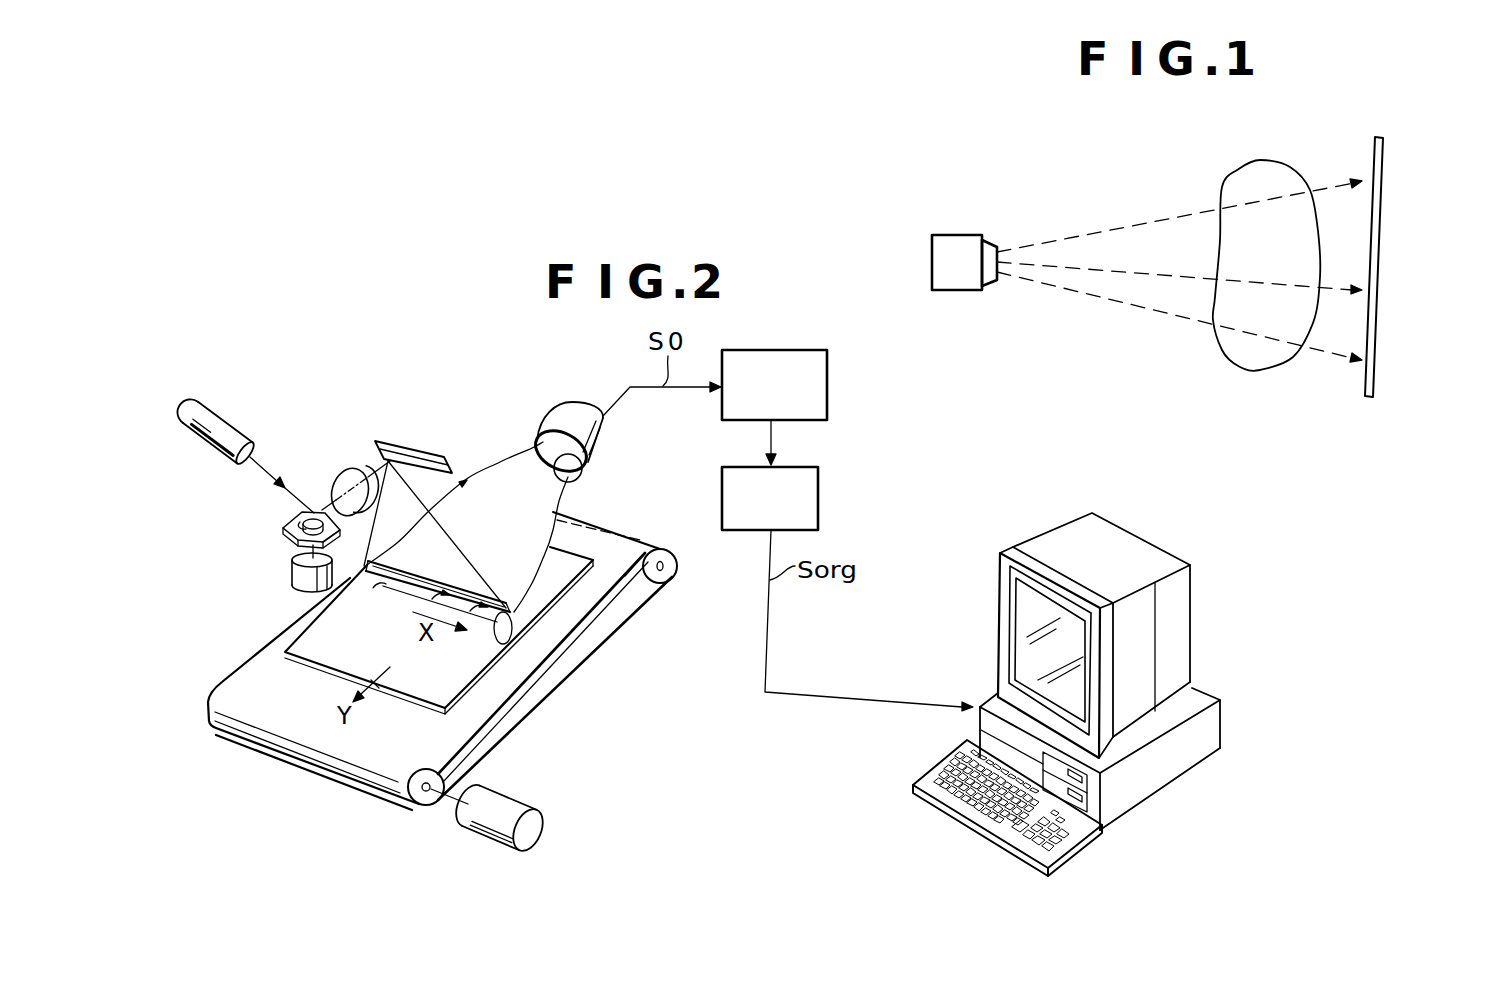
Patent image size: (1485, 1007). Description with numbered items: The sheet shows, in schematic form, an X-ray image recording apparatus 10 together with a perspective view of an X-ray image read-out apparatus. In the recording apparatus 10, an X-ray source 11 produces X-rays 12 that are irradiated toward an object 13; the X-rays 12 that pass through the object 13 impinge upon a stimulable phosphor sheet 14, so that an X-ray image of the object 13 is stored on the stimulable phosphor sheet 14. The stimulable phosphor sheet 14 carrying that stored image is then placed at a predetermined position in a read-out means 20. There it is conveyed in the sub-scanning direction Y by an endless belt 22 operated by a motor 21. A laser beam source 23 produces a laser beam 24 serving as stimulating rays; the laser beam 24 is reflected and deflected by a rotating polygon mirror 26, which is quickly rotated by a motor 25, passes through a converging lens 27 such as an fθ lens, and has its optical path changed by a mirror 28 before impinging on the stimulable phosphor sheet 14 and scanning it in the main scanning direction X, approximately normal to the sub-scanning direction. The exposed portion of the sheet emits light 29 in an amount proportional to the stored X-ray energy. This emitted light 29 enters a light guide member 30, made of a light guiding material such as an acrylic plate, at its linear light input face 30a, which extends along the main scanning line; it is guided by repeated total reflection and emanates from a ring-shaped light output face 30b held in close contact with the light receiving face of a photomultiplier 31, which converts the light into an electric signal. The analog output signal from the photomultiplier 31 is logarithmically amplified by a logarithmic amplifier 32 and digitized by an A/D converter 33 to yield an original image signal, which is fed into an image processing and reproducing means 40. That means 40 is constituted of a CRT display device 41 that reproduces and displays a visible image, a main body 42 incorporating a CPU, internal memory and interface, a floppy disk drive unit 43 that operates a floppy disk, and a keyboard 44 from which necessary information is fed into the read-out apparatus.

In FIG. 1, the measuring system 10 is at (1166, 152).
In FIG. 1, the X-ray source 11 is at (960, 240).
In FIG. 1, the X-rays 12 is at (1135, 227).
In FIG. 1, the object 13 is at (1272, 172).
In FIG. 1, the stimulable phosphor sheet 14 is at (1383, 148).
In FIG. 2, the stimulable phosphor sheet 14 is at (463, 668).
In FIG. 2, the read-out means 20 is at (402, 410).
In FIG. 2, the motor 21 is at (507, 803).
In FIG. 2, the endless belt 22 is at (443, 725).
In FIG. 2, the laser beam source 23 is at (221, 425).
In FIG. 2, the laser beam 24 is at (267, 470).
In FIG. 2, the motor 25 is at (292, 575).
In FIG. 2, the rotating polygon mirror 26 is at (290, 523).
In FIG. 2, the converging lens 27 is at (341, 470).
In FIG. 2, the mirror 28 is at (432, 447).
In FIG. 2, the emitted light 29 is at (397, 578).
In FIG. 2, the light guide member 30 is at (500, 483).
In FIG. 2, the linear light input face 30a is at (510, 662).
In FIG. 2, the ring-shaped light output face 30b is at (566, 481).
In FIG. 2, the photomultiplier 31 is at (570, 410).
In FIG. 2, the logarithmic amplifier 32 is at (811, 348).
In FIG. 2, the A/D converter 33 is at (818, 470).
In FIG. 2, the image processing and reproducing means 40 is at (1190, 505).
In FIG. 2, the CRT display device 41 is at (1038, 567).
In FIG. 2, the main body 42 is at (1203, 728).
In FIG. 2, the floppy disk drive unit 43 is at (1087, 783).
In FIG. 2, the keyboard 44 is at (925, 793).